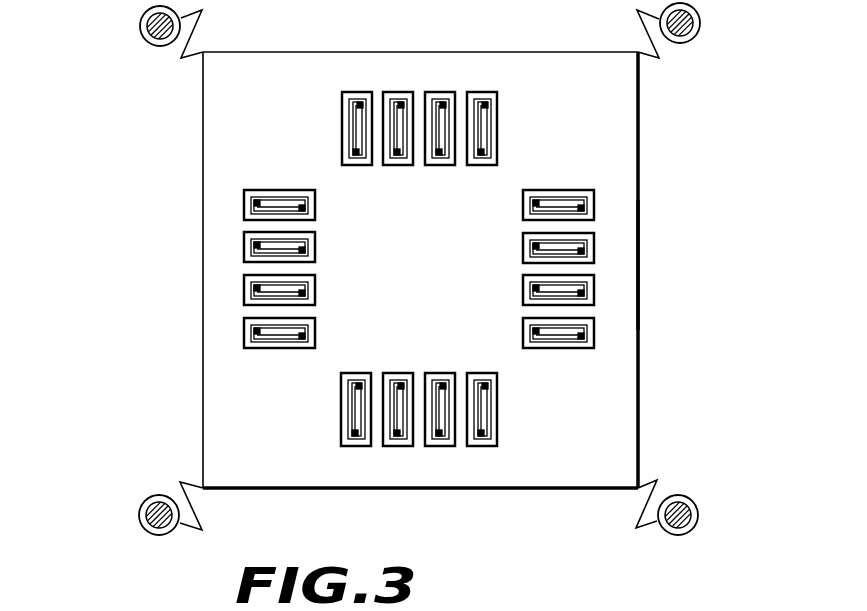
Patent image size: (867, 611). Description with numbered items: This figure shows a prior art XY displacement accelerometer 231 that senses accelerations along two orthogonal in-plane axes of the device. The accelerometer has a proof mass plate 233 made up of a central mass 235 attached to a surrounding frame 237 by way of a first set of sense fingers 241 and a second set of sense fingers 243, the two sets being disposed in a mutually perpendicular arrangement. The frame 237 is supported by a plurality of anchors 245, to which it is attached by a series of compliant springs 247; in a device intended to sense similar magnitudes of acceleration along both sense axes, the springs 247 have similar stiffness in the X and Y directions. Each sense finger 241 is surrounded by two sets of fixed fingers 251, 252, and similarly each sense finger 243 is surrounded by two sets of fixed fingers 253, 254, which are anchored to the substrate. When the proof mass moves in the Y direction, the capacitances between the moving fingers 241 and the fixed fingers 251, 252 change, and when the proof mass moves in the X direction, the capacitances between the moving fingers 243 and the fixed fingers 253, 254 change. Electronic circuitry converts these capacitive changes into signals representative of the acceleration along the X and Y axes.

The XY displacement accelerometer 231 is at (136, 111).
The proof mass plate 233 is at (640, 163).
The central mass 235 is at (430, 290).
The frame 237 is at (627, 265).
The first set of sense fingers 241 is at (255, 247).
The second set of sense fingers 243 is at (396, 270).
The anchors 245 is at (697, 498).
The compliant springs 247 is at (655, 485).
The fixed fingers 251 is at (278, 200).
The fixed fingers 252 is at (287, 212).
The fixed fingers 253 is at (362, 116).
The fixed fingers 254 is at (349, 128).